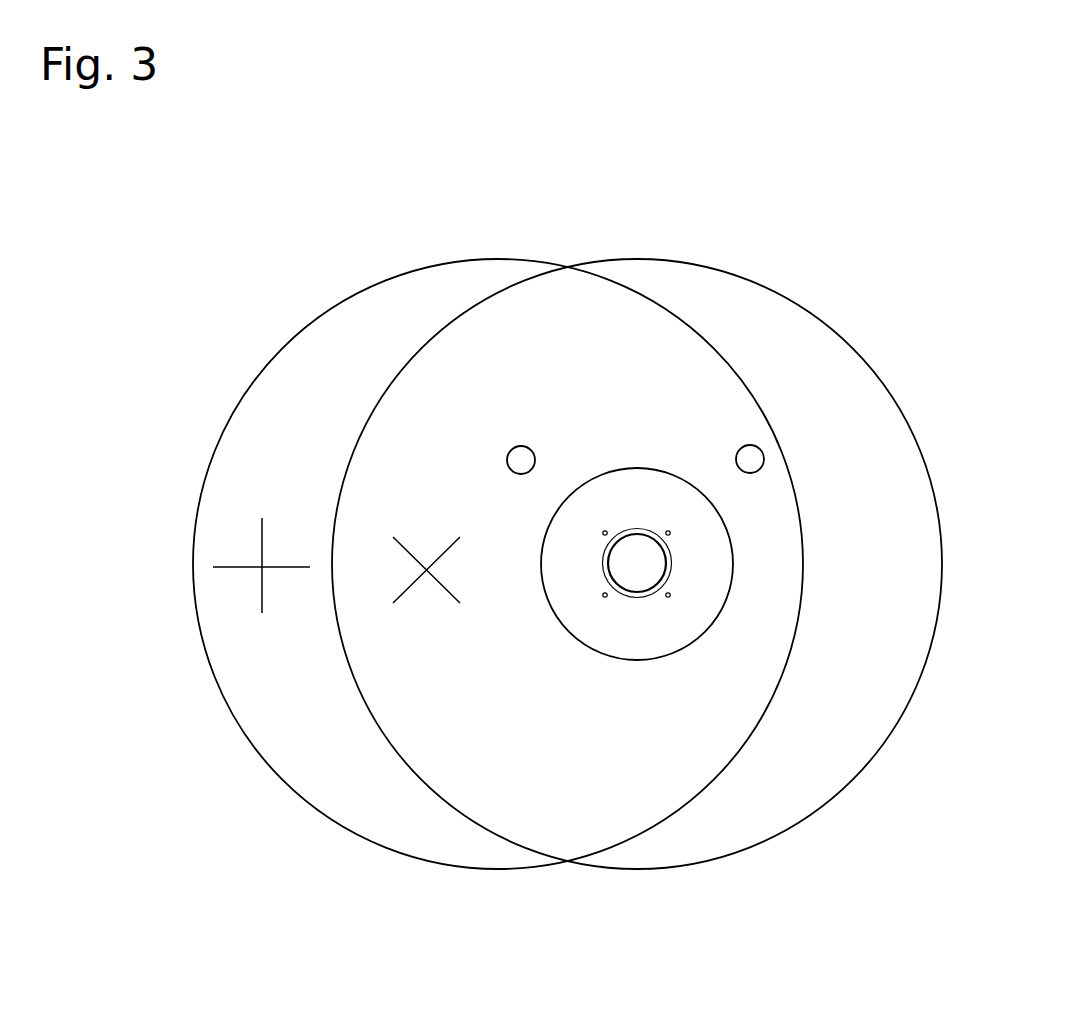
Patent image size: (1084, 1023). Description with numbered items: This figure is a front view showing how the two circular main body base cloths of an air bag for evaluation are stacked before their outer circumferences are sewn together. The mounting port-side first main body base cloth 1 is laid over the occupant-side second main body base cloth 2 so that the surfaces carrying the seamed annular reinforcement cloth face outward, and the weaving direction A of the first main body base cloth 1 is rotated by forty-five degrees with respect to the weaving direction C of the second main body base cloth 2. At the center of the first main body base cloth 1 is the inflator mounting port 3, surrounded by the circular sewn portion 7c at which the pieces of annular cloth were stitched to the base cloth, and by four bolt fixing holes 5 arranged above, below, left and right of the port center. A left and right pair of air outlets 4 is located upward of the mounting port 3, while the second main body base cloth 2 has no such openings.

The first main body base cloth 1 is at (630, 360).
The second main body base cloth 2 is at (378, 345).
The inflator mounting port 3 is at (637, 562).
The air outlet 4 is at (750, 445).
The bolt fixing hole 5 is at (672, 594).
The sewn portion 7c is at (623, 597).
The weaving direction of main body base cloth 1 A is at (424, 542).
The weaving direction of main body base cloth 2 C is at (262, 508).